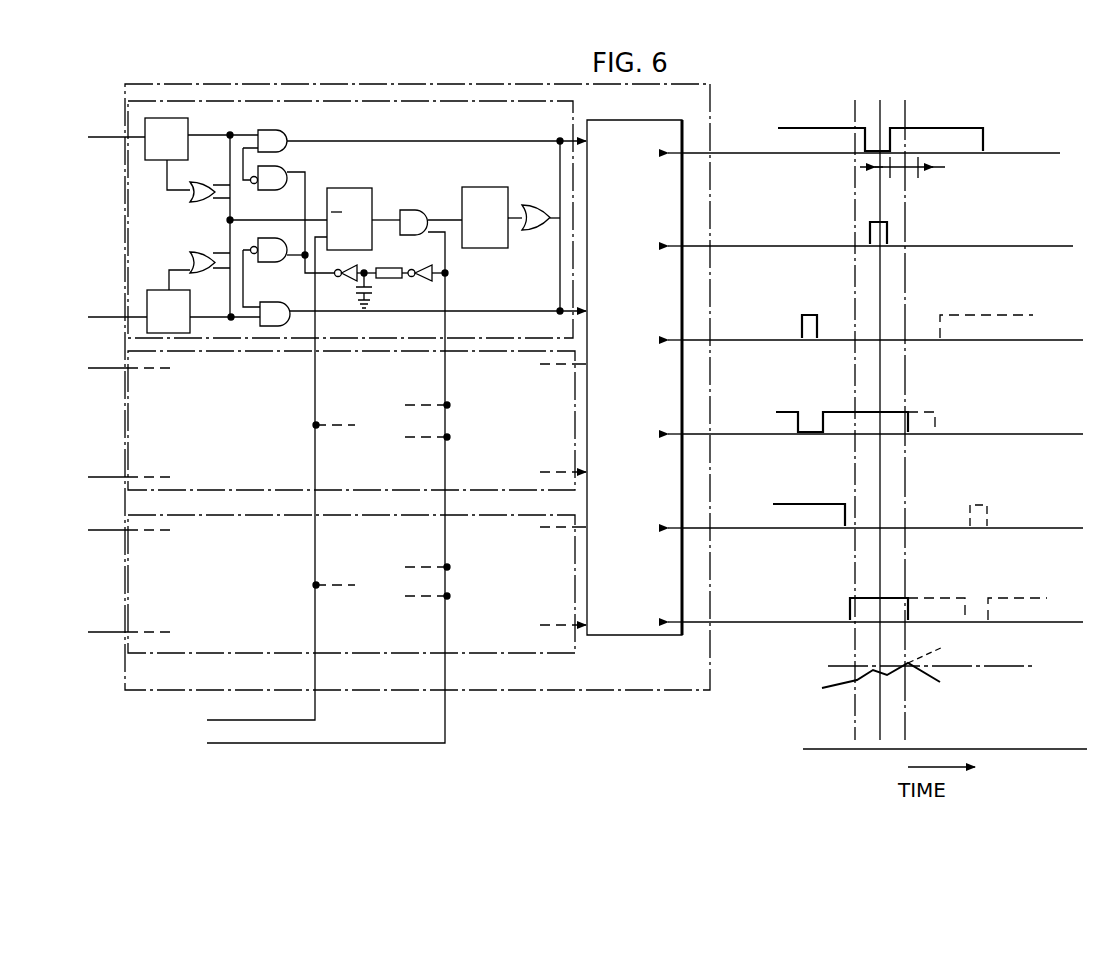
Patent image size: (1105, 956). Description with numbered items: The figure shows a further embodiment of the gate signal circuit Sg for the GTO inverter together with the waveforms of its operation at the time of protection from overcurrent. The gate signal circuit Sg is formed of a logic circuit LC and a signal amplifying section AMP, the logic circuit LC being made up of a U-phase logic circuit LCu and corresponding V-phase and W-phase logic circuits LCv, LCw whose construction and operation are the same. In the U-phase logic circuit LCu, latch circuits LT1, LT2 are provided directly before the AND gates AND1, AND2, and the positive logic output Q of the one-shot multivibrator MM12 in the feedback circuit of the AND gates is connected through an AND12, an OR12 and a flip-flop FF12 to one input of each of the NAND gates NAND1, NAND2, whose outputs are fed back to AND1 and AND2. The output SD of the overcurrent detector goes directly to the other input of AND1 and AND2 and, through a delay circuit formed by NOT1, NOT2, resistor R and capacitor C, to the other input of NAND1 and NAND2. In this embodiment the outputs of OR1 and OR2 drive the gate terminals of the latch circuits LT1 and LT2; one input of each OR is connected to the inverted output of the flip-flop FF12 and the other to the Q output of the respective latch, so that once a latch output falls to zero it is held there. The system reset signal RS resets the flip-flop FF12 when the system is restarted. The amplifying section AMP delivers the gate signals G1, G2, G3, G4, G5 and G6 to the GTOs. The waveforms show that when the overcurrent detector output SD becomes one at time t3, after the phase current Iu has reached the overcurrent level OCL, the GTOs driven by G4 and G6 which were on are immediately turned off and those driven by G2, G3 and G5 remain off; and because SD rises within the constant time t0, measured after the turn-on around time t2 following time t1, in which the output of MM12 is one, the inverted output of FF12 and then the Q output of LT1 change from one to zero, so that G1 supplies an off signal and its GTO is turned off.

The latch circuit LT1 is at (166, 118).
The latch circuit LT2 is at (147, 297).
The AND circuit AND1 is at (265, 130).
The AND circuit AND2 is at (272, 326).
The NAND circuit NAND1 is at (282, 166).
The NAND circuit NAND2 is at (262, 238).
The OR circuit OR1 is at (198, 181).
The OR circuit OR2 is at (204, 256).
The flip-flop FF12 is at (360, 188).
The AND circuit AND12 is at (407, 210).
The one-shot multivibrator MM12 is at (472, 187).
The OR circuit OR12 is at (530, 205).
The NOT circuit NOT1 is at (345, 281).
The NOT circuit NOT2 is at (427, 281).
The resistor R is at (388, 268).
The capacitor C is at (373, 290).
The U-phase logic circuit LCu is at (128, 212).
The V-phase logic circuit LCv is at (128, 433).
The W-phase logic circuit LCw is at (128, 596).
The logic circuit LC is at (548, 680).
The signal amplifying section AMP is at (680, 667).
The gate signal circuit Sg is at (648, 690).
The system reset signal RS is at (243, 485).
The output of overcurrent detector SD is at (304, 495).
The gate signal G1 is at (846, 138).
The gate signal G2 is at (852, 230).
The gate signal G3 is at (857, 324).
The gate signal G4 is at (857, 420).
The gate signal G5 is at (857, 513).
The gate signal G6 is at (857, 606).
The constant time t0 is at (903, 175).
The time t1 is at (853, 402).
The time t2 is at (878, 402).
The time t3 is at (930, 402).
The overcurrent level OCL is at (957, 668).
The U-phase motor current Iu is at (876, 696).